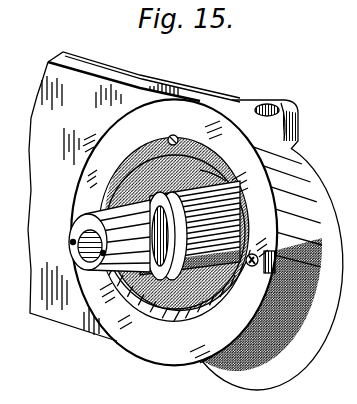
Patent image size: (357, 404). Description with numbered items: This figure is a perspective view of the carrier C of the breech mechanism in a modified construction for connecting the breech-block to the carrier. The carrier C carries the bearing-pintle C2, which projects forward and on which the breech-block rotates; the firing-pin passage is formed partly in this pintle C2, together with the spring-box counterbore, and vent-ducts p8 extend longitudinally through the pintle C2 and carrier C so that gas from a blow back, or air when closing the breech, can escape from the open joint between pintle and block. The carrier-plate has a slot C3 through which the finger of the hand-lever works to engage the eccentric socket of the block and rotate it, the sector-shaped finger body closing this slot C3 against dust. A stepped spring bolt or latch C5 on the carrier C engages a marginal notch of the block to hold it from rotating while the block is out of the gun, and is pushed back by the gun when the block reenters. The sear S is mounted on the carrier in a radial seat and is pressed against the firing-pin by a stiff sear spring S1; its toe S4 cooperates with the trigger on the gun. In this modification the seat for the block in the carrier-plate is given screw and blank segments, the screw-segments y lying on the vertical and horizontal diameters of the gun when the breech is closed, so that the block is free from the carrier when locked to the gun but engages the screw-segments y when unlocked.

The carrier C is at (208, 234).
The bearing-pintle C2 is at (70, 236).
The slot in the carrier-plate C3 is at (207, 169).
The spring bolt or latch C5 is at (170, 136).
The sear S is at (242, 222).
The sear spring S1 is at (250, 267).
The sear toe S4 is at (287, 234).
The vent-ducts p8 is at (72, 264).
The screw-segments of the carrier y is at (113, 334).